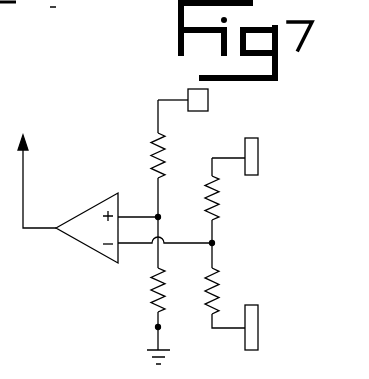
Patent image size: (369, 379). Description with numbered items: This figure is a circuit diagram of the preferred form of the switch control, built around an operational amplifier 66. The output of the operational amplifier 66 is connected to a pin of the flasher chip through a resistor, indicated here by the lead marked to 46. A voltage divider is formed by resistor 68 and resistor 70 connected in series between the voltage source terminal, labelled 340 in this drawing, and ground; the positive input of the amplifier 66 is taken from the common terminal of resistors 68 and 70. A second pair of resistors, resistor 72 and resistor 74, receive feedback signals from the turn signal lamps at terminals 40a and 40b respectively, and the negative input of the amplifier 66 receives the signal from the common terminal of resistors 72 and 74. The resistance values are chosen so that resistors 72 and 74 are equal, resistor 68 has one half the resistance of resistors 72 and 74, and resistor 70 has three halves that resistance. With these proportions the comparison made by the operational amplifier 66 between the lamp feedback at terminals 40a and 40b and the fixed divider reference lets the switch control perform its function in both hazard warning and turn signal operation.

The resistor 46 is at (28, 170).
The operational amplifier 66 is at (85, 208).
The resistor 68 is at (152, 148).
The resistor 70 is at (152, 293).
The resistor 72 is at (218, 200).
The resistor 74 is at (218, 286).
The voltage source terminal 340 is at (208, 100).
The terminal 40a is at (258, 161).
The terminal 40b is at (268, 322).